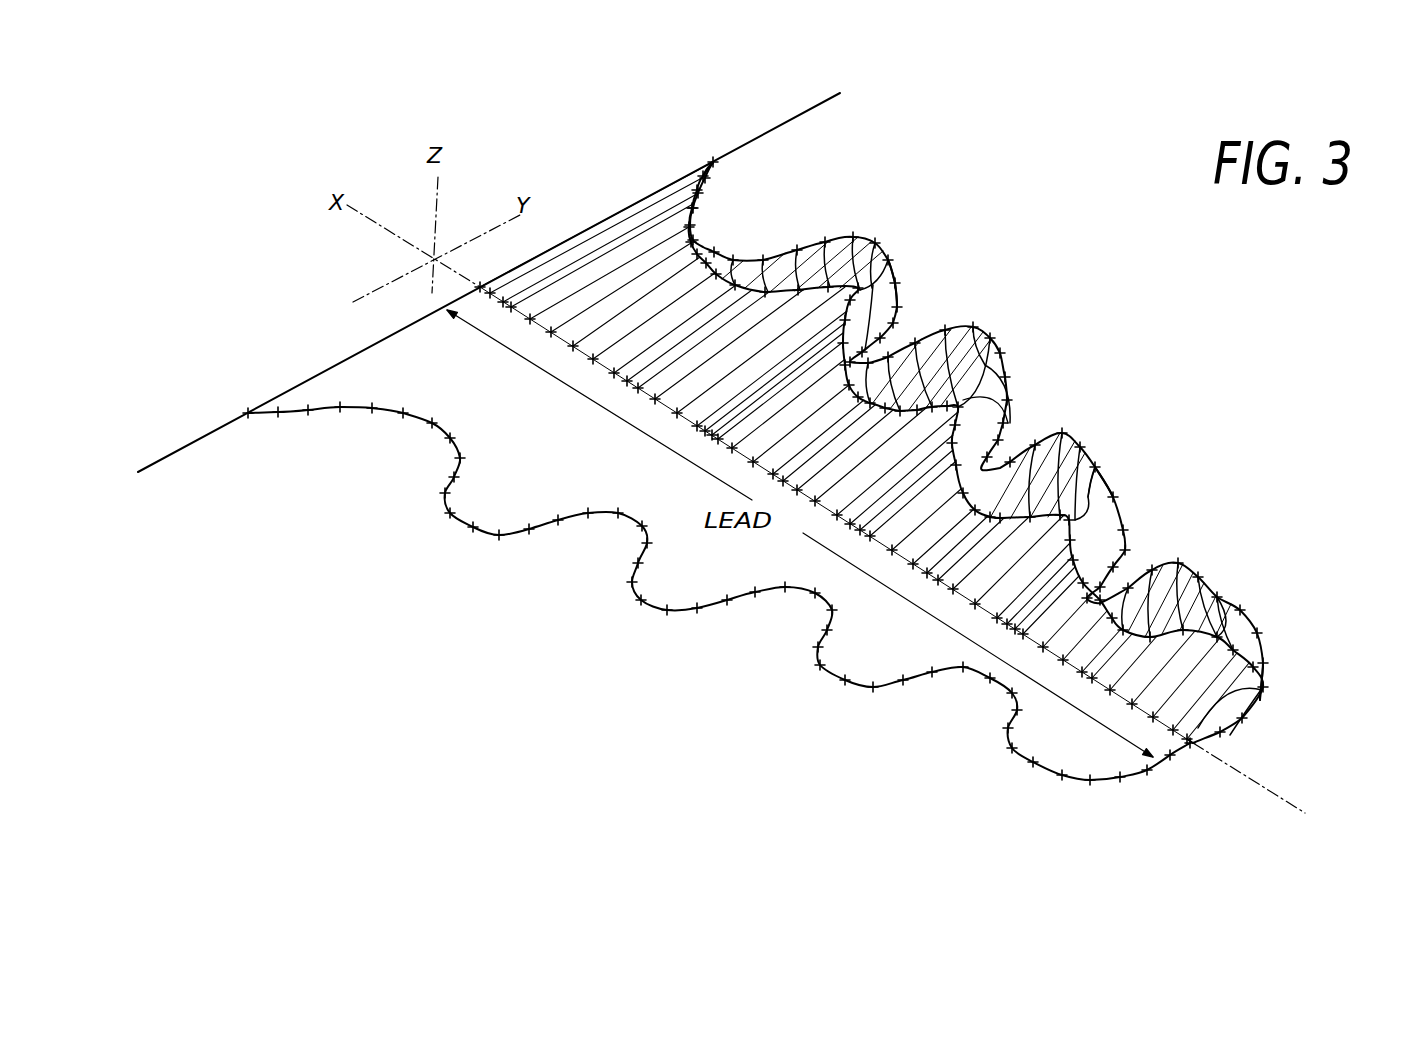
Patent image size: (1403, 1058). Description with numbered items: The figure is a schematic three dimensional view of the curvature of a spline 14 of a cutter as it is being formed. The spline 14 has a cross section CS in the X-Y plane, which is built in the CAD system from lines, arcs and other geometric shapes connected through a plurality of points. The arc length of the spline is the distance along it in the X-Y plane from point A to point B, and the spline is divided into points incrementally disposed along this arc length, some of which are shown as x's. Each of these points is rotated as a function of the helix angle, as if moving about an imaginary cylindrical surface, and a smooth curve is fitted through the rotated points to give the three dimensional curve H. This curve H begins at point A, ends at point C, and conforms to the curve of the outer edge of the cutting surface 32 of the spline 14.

The spline 14 is at (900, 178).
The cutting surface 32 is at (642, 283).
The point A is at (718, 167).
The point B is at (1250, 738).
The point C is at (1193, 750).
The three dimensional curve H is at (888, 257).
The cross section CS is at (993, 423).